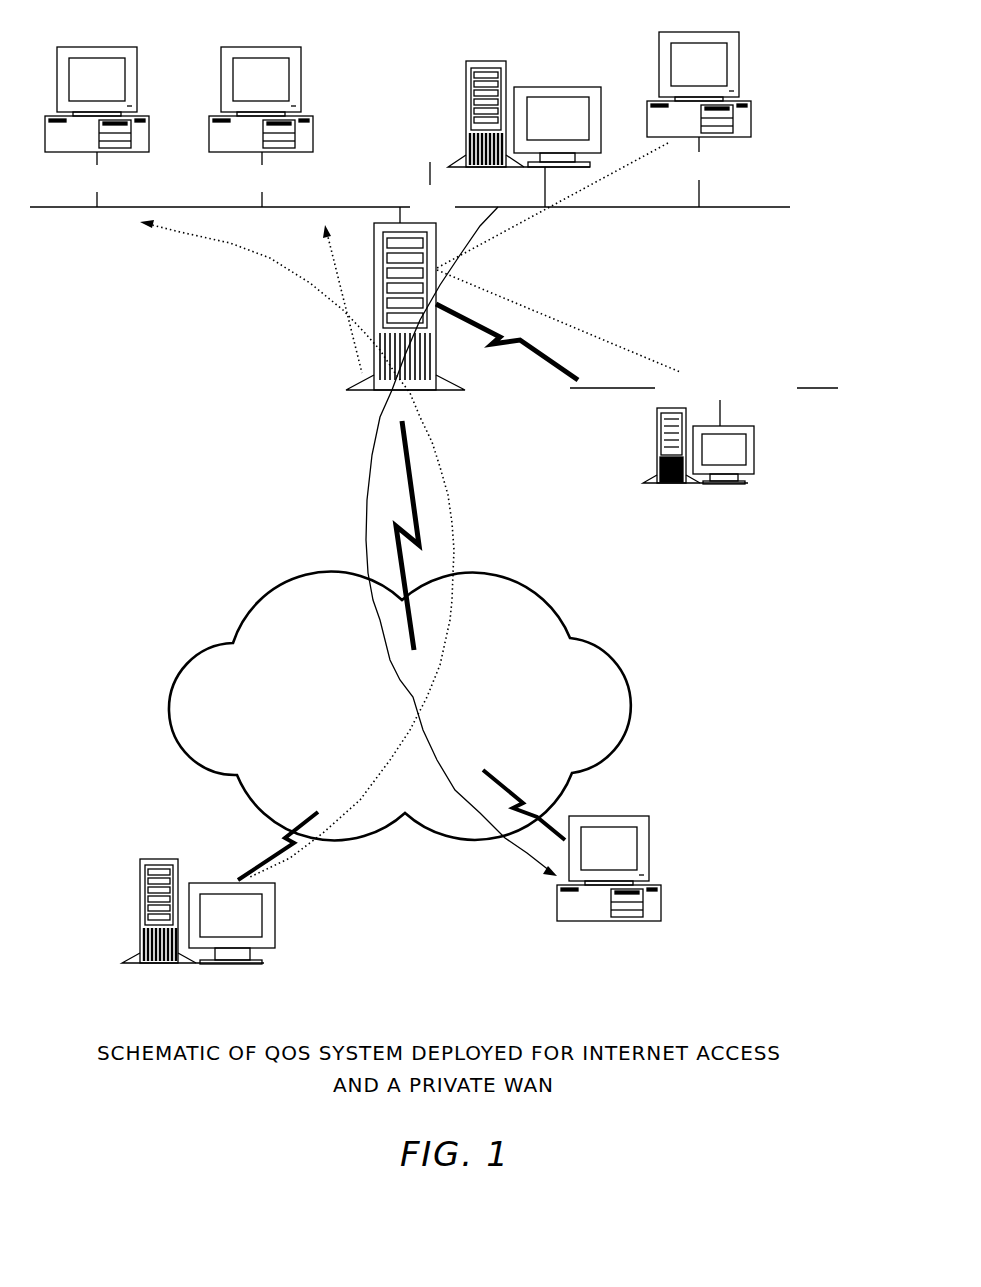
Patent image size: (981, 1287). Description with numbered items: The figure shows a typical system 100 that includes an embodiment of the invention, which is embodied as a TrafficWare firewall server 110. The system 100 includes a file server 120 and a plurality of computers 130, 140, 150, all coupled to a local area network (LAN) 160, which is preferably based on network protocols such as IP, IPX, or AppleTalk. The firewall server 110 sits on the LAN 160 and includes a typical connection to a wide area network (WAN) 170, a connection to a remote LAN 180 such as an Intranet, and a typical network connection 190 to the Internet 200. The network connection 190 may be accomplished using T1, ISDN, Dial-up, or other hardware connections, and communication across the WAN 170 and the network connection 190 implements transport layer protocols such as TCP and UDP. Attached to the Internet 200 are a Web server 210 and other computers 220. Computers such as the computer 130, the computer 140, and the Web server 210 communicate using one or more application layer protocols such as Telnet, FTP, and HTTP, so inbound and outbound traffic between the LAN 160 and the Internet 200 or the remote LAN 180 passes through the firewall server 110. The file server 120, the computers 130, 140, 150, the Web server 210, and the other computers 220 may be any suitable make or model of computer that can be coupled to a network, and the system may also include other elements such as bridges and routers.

The system 100 is at (448, 498).
The firewall server 110 is at (371, 312).
The file server 120 is at (524, 112).
The computer 130 is at (97, 106).
The computer 140 is at (261, 111).
The computer 150 is at (700, 103).
The local area network (LAN) 160 is at (433, 191).
The wide area network (WAN) 170 is at (511, 376).
The remote LAN 180 is at (718, 432).
The network connection 190 is at (510, 535).
The Internet 200 is at (432, 706).
The Web server 210 is at (229, 904).
The computer 220 is at (578, 859).